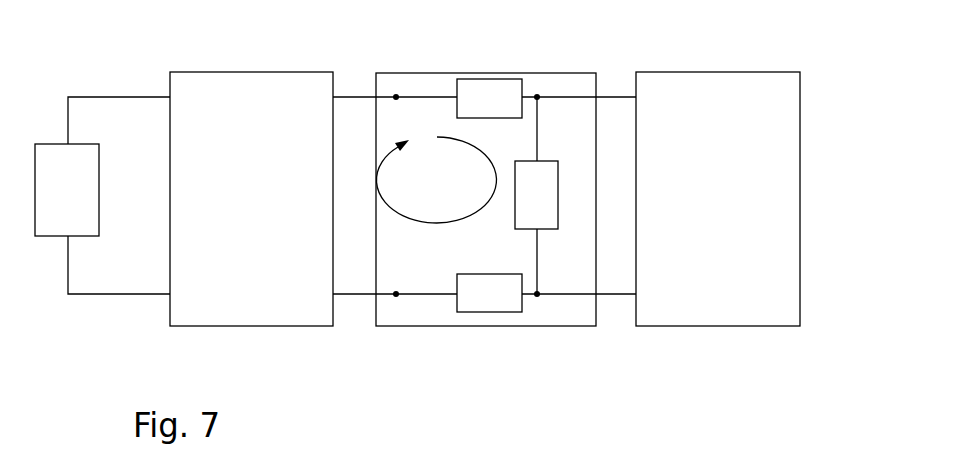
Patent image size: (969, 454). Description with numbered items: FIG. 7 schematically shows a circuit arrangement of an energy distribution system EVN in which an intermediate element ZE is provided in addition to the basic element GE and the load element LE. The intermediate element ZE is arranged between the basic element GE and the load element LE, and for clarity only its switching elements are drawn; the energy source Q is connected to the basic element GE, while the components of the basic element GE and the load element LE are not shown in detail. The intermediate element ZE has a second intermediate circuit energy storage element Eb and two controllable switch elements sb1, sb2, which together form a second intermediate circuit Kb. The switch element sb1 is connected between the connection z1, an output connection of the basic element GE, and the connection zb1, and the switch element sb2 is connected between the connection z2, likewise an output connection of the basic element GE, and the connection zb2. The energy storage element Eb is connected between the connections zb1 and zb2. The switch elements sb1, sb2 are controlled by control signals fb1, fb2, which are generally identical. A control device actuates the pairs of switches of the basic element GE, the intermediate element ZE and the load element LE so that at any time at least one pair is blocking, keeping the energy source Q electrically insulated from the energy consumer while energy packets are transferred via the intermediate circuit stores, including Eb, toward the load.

The energy source Q is at (102, 195).
The basic element GE is at (250, 72).
The load element LE is at (718, 72).
The intermediate element ZE is at (487, 326).
The connection z1 is at (337, 92).
The connection z2 is at (338, 301).
The control signal fb1 is at (486, 71).
The control signal fb2 is at (491, 245).
The switch element sb1 is at (489, 98).
The switch element sb2 is at (489, 293).
The connection zb1 is at (562, 129).
The connection zb2 is at (562, 261).
The second intermediate circuit energy storage element Eb is at (536, 195).
The second intermediate circuit Kb is at (436, 180).
The electrical network EVN is at (675, 352).